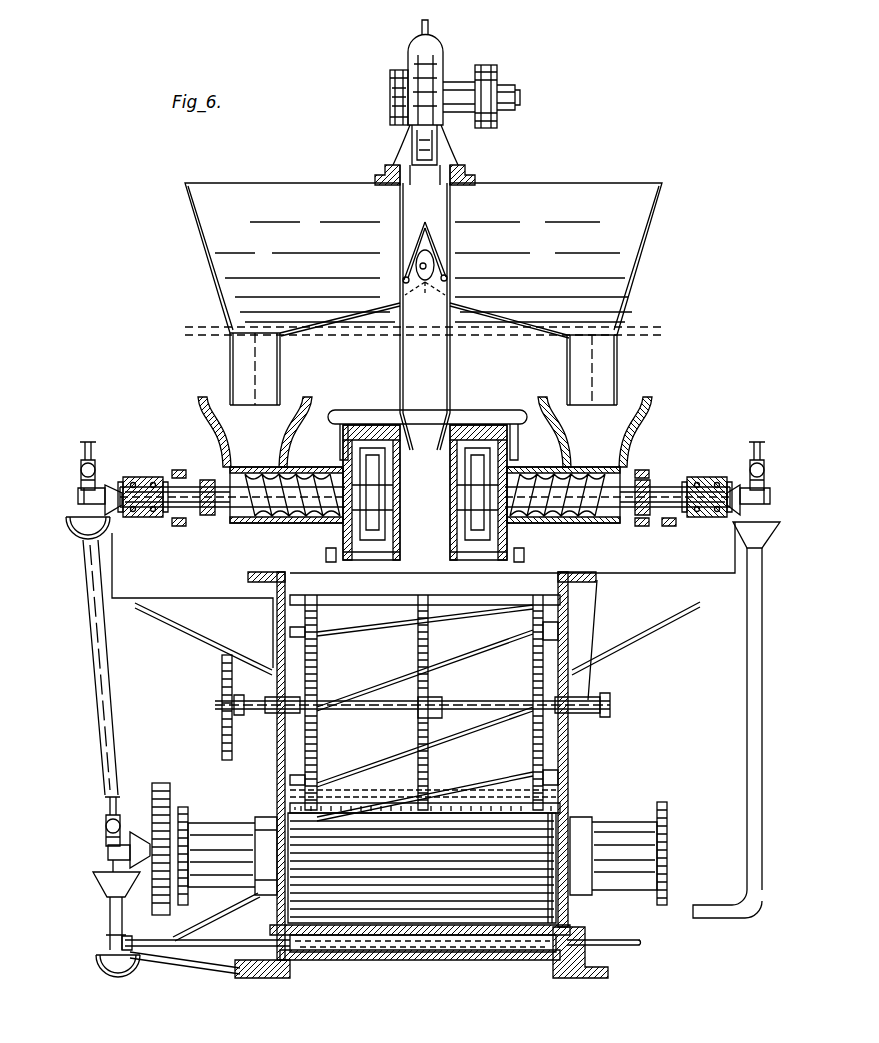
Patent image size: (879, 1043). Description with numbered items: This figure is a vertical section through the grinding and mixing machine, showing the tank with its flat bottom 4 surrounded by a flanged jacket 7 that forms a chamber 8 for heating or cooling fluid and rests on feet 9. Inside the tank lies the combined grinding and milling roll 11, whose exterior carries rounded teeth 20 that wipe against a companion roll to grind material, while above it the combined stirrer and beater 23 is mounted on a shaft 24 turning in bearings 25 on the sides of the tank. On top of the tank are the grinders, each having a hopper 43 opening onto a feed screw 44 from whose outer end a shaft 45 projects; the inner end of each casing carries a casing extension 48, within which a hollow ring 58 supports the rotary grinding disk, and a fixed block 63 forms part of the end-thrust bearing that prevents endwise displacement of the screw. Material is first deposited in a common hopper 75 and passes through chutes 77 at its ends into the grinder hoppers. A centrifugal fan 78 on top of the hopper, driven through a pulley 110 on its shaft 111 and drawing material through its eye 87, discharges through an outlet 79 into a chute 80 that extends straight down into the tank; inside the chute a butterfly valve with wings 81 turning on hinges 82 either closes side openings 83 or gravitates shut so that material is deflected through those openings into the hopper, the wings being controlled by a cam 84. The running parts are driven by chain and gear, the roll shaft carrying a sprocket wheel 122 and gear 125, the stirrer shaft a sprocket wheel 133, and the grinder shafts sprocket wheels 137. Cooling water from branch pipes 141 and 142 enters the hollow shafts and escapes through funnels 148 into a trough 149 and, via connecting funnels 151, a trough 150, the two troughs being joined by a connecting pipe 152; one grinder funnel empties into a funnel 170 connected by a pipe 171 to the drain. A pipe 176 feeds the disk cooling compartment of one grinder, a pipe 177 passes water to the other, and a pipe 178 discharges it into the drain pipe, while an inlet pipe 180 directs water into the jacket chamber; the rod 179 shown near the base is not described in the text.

The bottom 4 is at (405, 924).
The flanged jacket 7 is at (430, 954).
The chamber 8 is at (490, 962).
The feet 9 is at (256, 978).
The combined grinding and milling roll 11 is at (515, 922).
The teeth 20 is at (375, 890).
The combined stirrer and beater 23 is at (425, 704).
The shaft 24 is at (457, 700).
The bearings 25 is at (268, 716).
The hopper 43 is at (205, 412).
The feed screw 44 is at (272, 524).
The shaft 45 is at (180, 500).
The casing extension 48 is at (390, 560).
The hollow ring 58 is at (350, 560).
The fixed block 63 is at (700, 540).
The hopper 75 is at (625, 300).
The chutes 77 is at (232, 367).
The centrifugal fan 78 is at (440, 52).
The outlet 79 is at (430, 182).
The chute 80 is at (430, 390).
The wings 81 is at (415, 233).
The hinges 82 is at (404, 281).
The openings 83 is at (400, 262).
The cam 84 is at (425, 284).
The eye 87 is at (393, 98).
The pulley 110 is at (497, 76).
The shaft 111 is at (514, 100).
The sprocket wheel 122 is at (665, 815).
The gear 125 is at (202, 862).
The sprocket wheel 133 is at (213, 707).
The sprocket wheels 137 is at (180, 526).
The branch pipe 141 is at (82, 470).
The branch pipe 142 is at (104, 832).
The funnel 148 is at (110, 490).
The trough 149 is at (80, 528).
The trough 150 is at (100, 968).
The connecting funnels 151 is at (110, 908).
The connecting pipe 152 is at (88, 722).
The funnel 170 is at (769, 544).
The pipe 171 is at (750, 700).
The pipe 176 is at (334, 558).
The pipe 177 is at (488, 412).
The pipe 178 is at (668, 526).
The rod 179 is at (222, 947).
The inlet pipe 180 is at (618, 946).